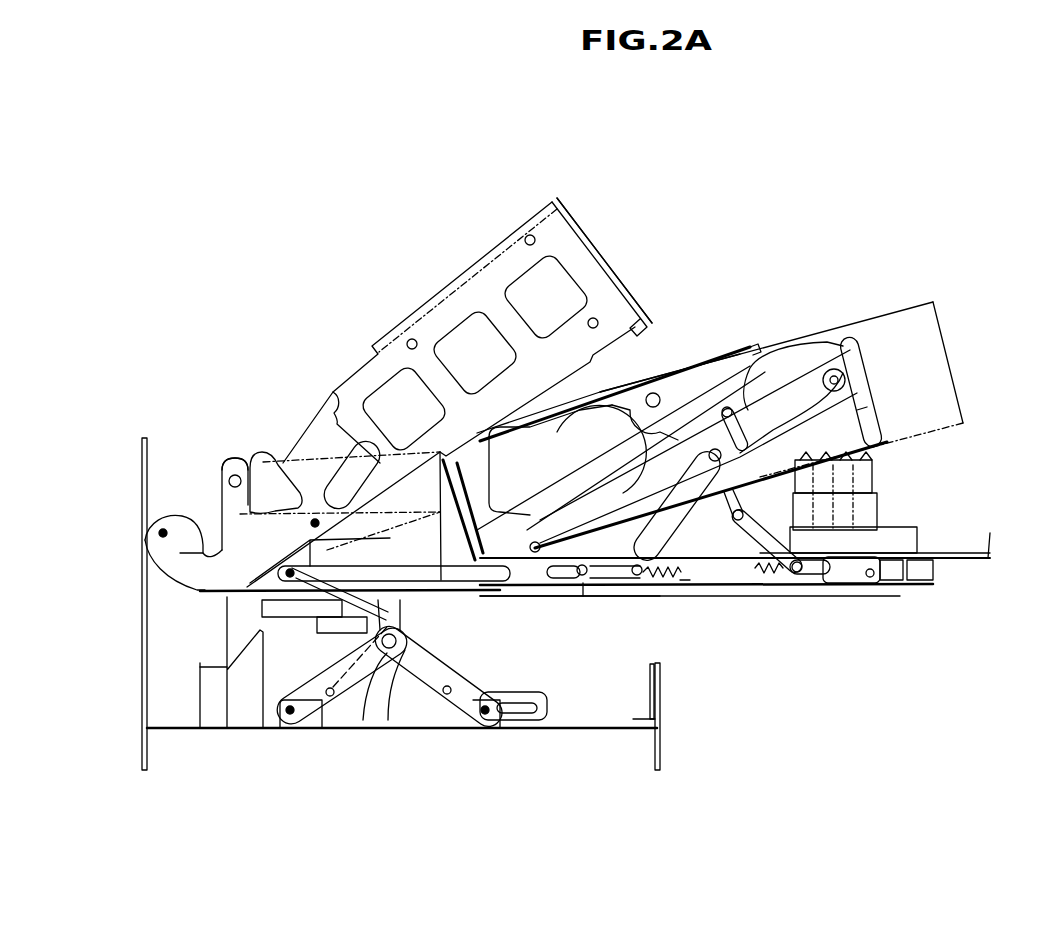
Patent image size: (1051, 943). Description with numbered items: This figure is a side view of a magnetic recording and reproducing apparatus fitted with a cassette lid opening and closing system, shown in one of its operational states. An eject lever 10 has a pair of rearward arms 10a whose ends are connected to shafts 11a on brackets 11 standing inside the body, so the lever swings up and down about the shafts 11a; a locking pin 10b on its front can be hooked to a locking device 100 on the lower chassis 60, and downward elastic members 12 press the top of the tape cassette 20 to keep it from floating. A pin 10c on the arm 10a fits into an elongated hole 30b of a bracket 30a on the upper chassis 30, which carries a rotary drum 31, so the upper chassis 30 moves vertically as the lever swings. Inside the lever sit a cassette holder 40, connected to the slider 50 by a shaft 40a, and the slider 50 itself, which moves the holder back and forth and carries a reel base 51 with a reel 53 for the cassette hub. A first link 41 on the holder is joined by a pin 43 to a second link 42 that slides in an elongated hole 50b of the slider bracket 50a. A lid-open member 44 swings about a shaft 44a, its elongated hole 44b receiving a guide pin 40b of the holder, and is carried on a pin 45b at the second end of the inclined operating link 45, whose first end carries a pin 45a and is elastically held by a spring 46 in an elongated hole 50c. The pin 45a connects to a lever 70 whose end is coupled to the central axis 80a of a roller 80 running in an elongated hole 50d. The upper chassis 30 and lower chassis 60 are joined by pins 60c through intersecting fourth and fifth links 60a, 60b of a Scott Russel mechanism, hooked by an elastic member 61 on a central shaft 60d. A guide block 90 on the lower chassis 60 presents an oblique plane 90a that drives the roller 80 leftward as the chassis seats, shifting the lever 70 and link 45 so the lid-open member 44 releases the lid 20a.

The eject lever 10 is at (554, 199).
The arm 10a is at (185, 553).
The locking pin 10b is at (637, 318).
The pin 10c is at (290, 472).
The bracket 11 is at (153, 640).
The shaft 11a is at (143, 535).
The elastic member 12 is at (452, 287).
The tape cassette 20 is at (928, 318).
The lid 20a is at (600, 390).
The upper chassis 30 is at (200, 598).
The bracket 30a is at (210, 520).
The elongated hole 30b is at (262, 445).
The rotary drum 31 is at (333, 392).
The cassette holder 40 is at (716, 366).
The shaft 40a is at (507, 577).
The guide pin 40b is at (727, 408).
The first link 41 is at (663, 590).
The second link 42 is at (747, 577).
The pin 43 is at (722, 583).
The lid-open member 44 is at (813, 365).
The shaft 44a is at (870, 378).
The elongated hole 44b is at (867, 373).
The lid-open member operating link 45 is at (640, 545).
The pin 45a is at (583, 583).
The pin 45b is at (867, 407).
The spring 46 is at (680, 580).
The slider 50 is at (822, 588).
The bracket 50a is at (860, 587).
The elongated hole 50b is at (813, 567).
The elongated hole 50c is at (587, 703).
The elongated hole 50d is at (535, 546).
The reel base 51 is at (905, 540).
The reel 53 is at (870, 487).
The lower chassis 60 is at (597, 730).
The fourth link 60a is at (313, 700).
The fifth link 60b is at (457, 697).
The pin 60c is at (287, 730).
The shaft 60d is at (397, 653).
The elastic member 61 is at (363, 670).
The lever 70 is at (620, 583).
The roller 80 is at (580, 565).
The central axis 80a is at (582, 566).
The guide block 90 is at (237, 728).
The oblique plane 90a is at (200, 662).
The locking device 100 is at (660, 700).